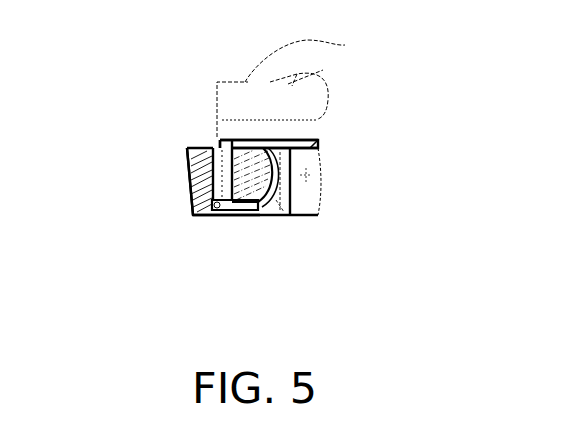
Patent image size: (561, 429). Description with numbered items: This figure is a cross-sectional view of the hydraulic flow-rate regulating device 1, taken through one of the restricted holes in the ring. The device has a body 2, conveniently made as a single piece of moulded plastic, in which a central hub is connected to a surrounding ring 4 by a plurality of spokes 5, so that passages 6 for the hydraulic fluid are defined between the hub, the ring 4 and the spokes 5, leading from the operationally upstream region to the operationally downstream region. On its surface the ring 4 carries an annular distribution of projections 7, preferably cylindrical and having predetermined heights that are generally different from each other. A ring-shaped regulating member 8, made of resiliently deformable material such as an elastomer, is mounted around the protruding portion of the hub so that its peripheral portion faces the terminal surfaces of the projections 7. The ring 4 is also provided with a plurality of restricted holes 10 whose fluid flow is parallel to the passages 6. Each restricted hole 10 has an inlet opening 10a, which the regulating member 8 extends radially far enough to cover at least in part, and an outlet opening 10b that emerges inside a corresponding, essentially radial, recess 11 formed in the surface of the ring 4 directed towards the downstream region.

The hydraulic flow-rate regulating device 1 is at (162, 131).
The body 2 is at (189, 195).
The ring 4 is at (190, 179).
The spokes 5 is at (316, 189).
The passages 6 is at (291, 218).
The projections 7 is at (253, 138).
The regulating member 8 is at (345, 45).
The restricted holes 10 is at (187, 150).
The inlet opening 10a is at (216, 140).
The outlet opening 10b is at (194, 215).
The recess 11 is at (240, 216).